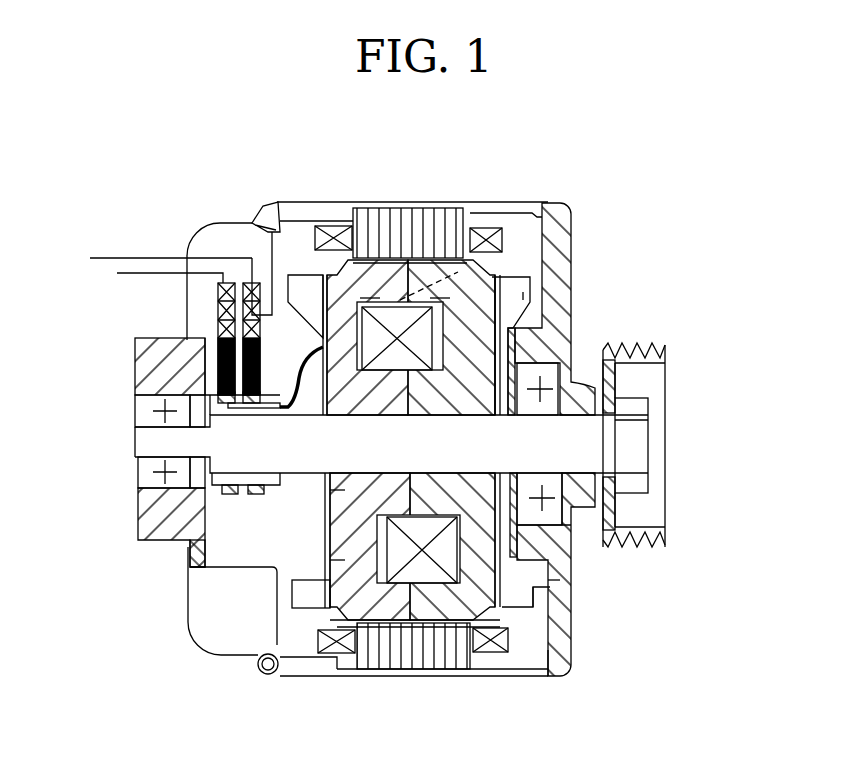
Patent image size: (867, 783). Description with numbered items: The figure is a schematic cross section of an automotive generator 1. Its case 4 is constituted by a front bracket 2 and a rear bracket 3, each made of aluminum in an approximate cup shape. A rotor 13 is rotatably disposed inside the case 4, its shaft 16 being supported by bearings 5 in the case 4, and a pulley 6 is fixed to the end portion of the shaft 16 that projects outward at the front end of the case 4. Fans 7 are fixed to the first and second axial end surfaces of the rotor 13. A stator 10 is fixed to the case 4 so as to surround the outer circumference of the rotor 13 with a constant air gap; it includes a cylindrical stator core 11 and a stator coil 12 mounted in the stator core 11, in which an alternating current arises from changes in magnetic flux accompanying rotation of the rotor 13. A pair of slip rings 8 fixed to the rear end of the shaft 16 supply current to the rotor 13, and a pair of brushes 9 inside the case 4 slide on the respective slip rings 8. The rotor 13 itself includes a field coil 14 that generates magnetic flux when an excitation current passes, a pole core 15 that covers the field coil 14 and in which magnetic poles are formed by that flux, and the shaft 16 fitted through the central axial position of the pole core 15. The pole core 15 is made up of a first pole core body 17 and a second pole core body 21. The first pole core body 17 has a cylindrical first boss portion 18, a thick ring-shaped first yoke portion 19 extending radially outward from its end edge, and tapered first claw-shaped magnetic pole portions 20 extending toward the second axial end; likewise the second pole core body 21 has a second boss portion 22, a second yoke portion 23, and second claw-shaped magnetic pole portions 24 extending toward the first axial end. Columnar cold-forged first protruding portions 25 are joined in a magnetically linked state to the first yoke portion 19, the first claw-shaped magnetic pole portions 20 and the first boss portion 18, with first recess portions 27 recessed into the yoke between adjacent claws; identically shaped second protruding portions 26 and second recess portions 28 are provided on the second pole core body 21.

The automotive generator 1 is at (137, 148).
The front bracket 2 is at (575, 230).
The rear bracket 3 is at (180, 627).
The case 4 is at (585, 200).
The bearings 5 is at (147, 405).
The pulley 6 is at (662, 340).
The fans 7 is at (523, 292).
The slip rings 8 is at (280, 403).
The brushes 9 is at (220, 357).
The stator 10 is at (430, 747).
The stator core 11 is at (430, 660).
The stator coil 12 is at (488, 652).
The rotor 13 is at (492, 305).
The field coil 14 is at (377, 330).
The pole core 15 is at (455, 152).
The shaft 16 is at (598, 445).
The first pole core body 17 is at (438, 288).
The first boss portion 18 is at (553, 557).
The first yoke portion 19 is at (537, 580).
The first claw-shaped magnetic pole portions 20 is at (552, 593).
The second pole core body 21 is at (372, 290).
The second boss portion 22 is at (357, 483).
The second yoke portion 23 is at (357, 543).
The second claw-shaped magnetic pole portions 24 is at (440, 620).
The first protruding portions 25 is at (440, 345).
The second protruding portions 26 is at (276, 674).
The first recess portions 27 is at (570, 673).
The second recess portions 28 is at (433, 343).